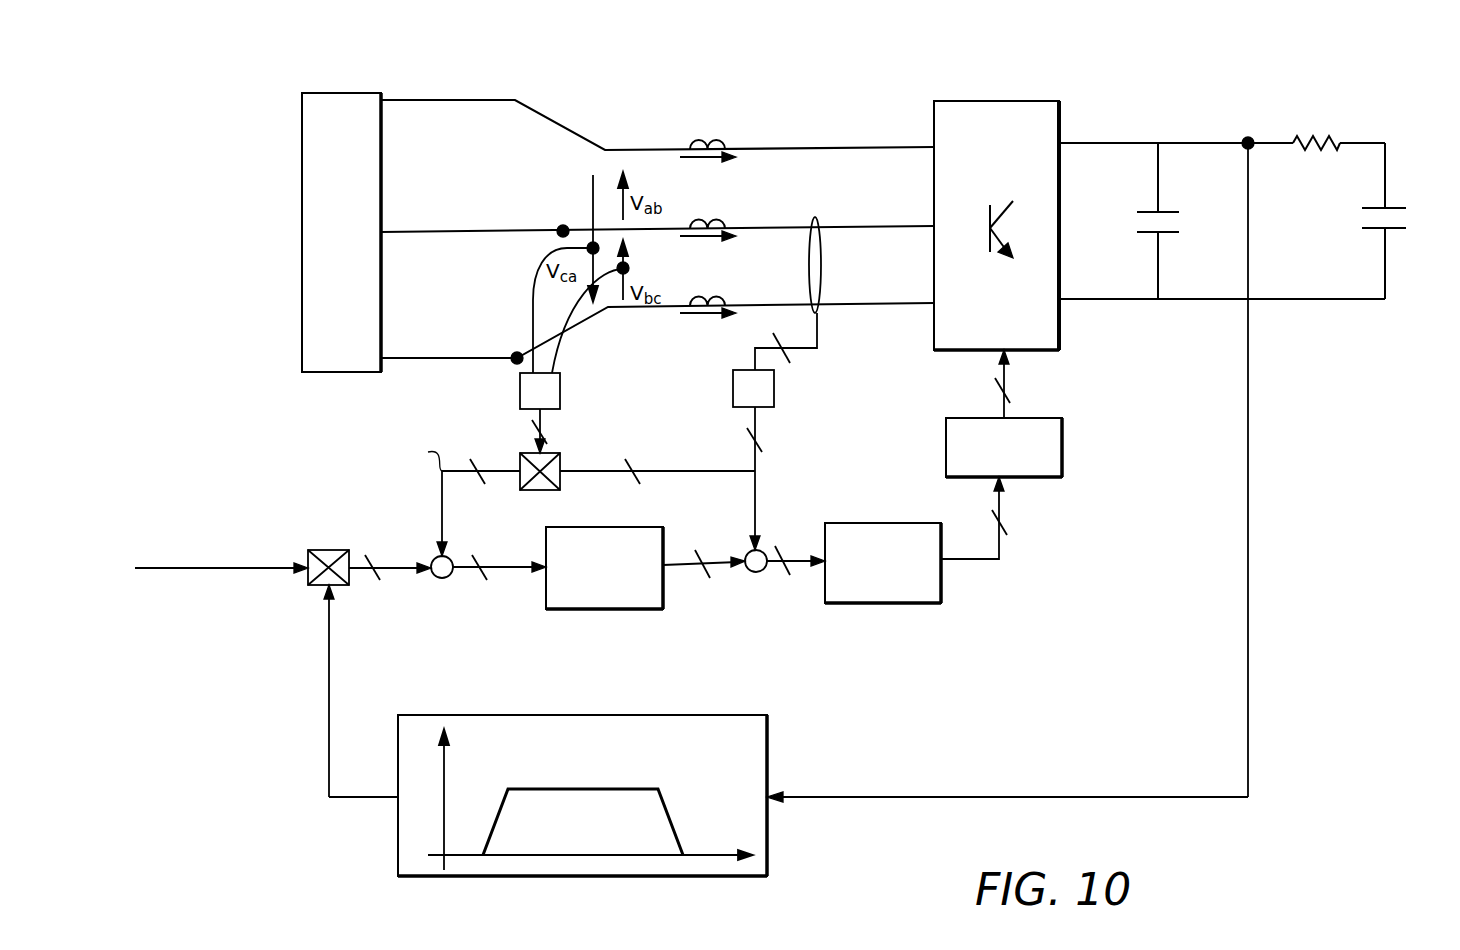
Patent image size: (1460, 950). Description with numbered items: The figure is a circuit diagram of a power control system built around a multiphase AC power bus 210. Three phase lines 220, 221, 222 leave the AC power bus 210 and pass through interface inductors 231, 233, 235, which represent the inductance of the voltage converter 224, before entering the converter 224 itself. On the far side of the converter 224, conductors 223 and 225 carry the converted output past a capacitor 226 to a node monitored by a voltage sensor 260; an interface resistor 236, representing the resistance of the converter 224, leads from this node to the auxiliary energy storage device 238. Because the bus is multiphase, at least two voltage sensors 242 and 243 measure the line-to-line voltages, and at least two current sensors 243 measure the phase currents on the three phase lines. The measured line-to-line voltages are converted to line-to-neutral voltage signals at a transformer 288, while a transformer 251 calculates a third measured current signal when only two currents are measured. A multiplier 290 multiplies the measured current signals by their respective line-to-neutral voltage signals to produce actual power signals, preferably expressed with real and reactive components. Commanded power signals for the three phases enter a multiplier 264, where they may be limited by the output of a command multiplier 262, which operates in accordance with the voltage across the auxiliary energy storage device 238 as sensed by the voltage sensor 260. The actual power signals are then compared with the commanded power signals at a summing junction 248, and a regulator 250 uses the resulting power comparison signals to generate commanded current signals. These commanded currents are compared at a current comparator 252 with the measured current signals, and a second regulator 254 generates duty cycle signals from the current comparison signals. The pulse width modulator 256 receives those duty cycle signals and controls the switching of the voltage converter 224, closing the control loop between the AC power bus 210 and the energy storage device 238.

The AC power bus 210 is at (357, 92).
The phase a conductor 220 is at (878, 146).
The phase b conductor 221 is at (888, 226).
The phase c conductor 222 is at (867, 304).
The DC link positive conductor 223 is at (1085, 143).
The voltage converter 224 is at (998, 100).
The DC link negative conductor 225 is at (1107, 303).
The DC link capacitor Clnk 226 is at (1168, 208).
The interface inductor 231 is at (735, 146).
The interface inductor 233 is at (740, 225).
The interface inductor 235 is at (696, 291).
The interface resistor 236 is at (1345, 138).
The auxiliary energy storage device 238 is at (1392, 204).
The voltage sensor 242 is at (533, 313).
The current sensor 243 is at (566, 301).
The summing junction 248 is at (438, 580).
The regulator 250 is at (663, 530).
The transformer 251 is at (733, 388).
The current comparator 252 is at (752, 575).
The regulator 254 is at (945, 585).
The PWM 256 is at (1064, 462).
The voltage sensor 260 is at (1249, 136).
The command multiplier 262 is at (768, 758).
The multiplier 264 is at (310, 586).
The transformer 288 is at (562, 390).
The multiplier 290 is at (520, 476).